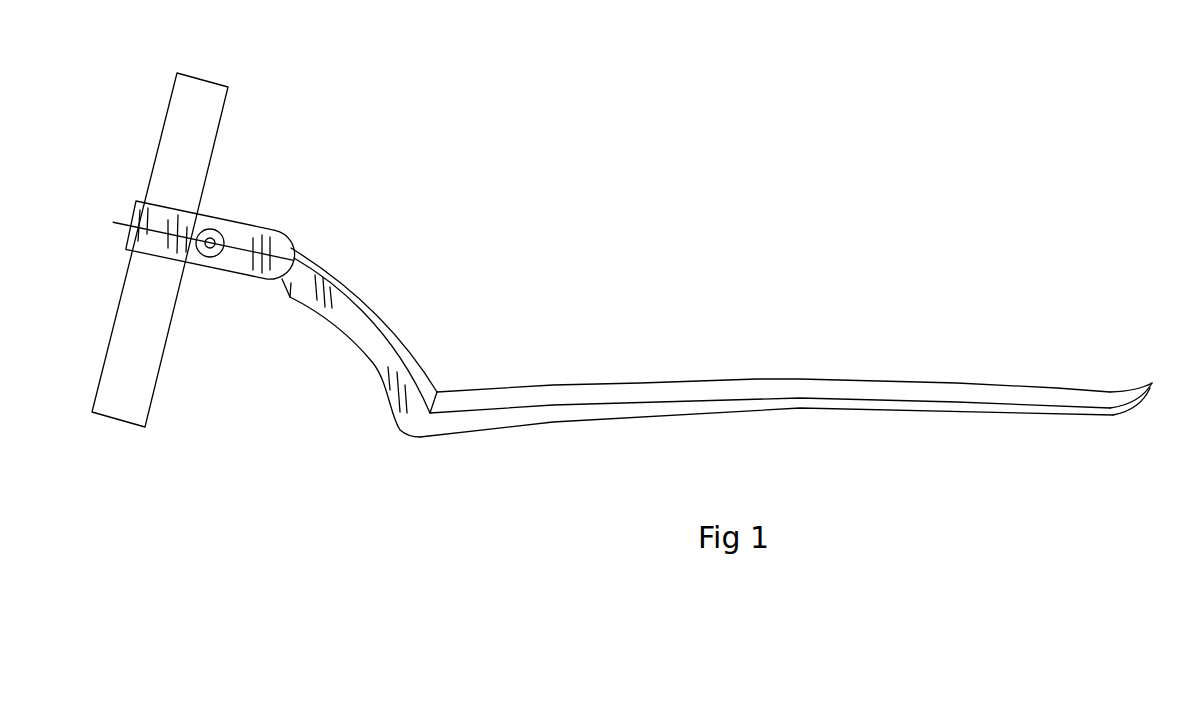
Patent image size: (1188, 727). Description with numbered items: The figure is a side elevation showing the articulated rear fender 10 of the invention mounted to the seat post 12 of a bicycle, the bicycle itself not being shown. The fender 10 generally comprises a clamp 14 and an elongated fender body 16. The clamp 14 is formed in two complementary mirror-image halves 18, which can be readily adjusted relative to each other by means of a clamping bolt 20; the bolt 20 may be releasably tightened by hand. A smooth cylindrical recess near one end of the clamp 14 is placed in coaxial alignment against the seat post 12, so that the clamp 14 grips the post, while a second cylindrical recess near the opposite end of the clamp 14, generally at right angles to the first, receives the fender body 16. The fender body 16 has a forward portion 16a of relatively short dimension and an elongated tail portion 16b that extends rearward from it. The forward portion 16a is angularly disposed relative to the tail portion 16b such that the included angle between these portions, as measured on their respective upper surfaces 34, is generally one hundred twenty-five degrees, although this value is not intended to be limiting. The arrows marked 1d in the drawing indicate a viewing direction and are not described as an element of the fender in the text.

The articulated rear fender 10 is at (602, 448).
The seat post 12 is at (203, 120).
The clamp 14 is at (245, 233).
The fender body 16 is at (642, 387).
The forward portion 16a is at (353, 290).
The tail portion 16b is at (757, 378).
The complementary mirror-image halves 18 is at (274, 243).
The clamping bolt 20 is at (208, 257).
The upper surfaces 34 is at (552, 384).
The view direction arrows for FIG. 1d is at (113, 223).